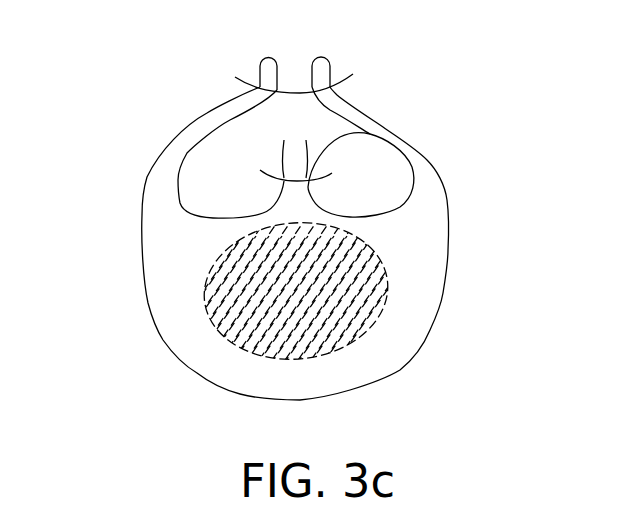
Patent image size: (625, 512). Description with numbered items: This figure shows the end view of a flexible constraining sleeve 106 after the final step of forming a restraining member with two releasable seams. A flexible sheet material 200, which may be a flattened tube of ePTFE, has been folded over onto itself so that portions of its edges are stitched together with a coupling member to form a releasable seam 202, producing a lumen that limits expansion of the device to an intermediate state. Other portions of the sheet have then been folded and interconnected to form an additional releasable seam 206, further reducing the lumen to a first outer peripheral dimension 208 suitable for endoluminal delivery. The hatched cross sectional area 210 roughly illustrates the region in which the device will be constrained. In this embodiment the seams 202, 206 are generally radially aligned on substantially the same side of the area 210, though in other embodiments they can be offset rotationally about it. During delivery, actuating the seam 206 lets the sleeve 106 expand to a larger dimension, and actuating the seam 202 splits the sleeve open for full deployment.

The flexible sleeve 106 is at (448, 200).
The flexible sheet material 200 is at (180, 205).
The releasable seam 202 is at (368, 133).
The additional releasable seam 206 is at (353, 74).
The first outer peripheral dimension 208 is at (440, 302).
The cross sectional area 210 is at (367, 332).